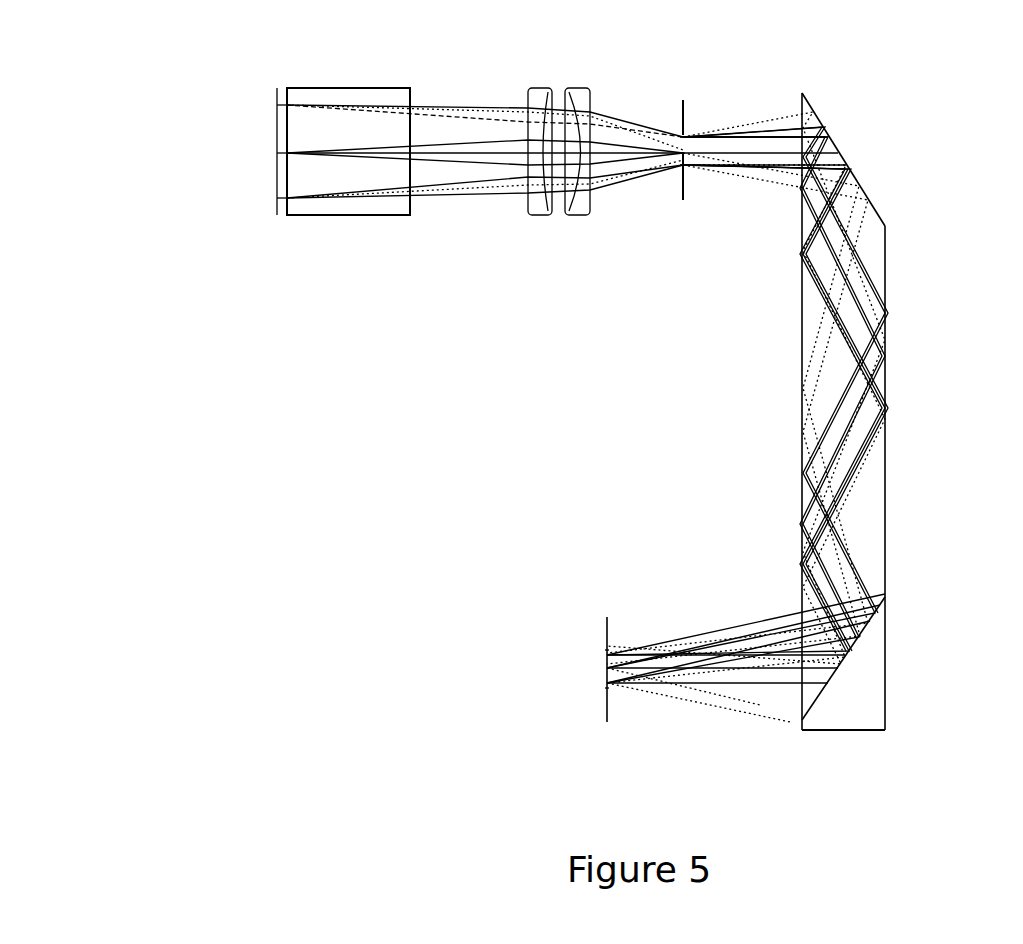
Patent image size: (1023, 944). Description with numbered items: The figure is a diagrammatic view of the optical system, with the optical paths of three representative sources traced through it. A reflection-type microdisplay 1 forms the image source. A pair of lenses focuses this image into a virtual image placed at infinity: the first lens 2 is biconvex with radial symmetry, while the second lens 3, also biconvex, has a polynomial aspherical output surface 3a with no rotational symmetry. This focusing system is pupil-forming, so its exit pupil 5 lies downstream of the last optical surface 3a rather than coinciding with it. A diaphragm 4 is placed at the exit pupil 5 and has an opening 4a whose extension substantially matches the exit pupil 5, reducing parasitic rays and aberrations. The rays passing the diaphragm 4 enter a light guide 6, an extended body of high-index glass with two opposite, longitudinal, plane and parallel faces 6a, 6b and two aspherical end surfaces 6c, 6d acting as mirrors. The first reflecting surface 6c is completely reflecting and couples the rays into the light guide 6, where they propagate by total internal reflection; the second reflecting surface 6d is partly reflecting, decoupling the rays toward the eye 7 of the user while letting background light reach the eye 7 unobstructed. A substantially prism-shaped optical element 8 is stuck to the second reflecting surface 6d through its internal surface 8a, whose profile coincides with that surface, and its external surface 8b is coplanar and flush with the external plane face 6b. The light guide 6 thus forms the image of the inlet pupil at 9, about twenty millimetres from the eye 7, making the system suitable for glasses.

The microdisplay 1 is at (295, 129).
The first lens 2 is at (529, 79).
The second lens 3 is at (612, 162).
The aspherical output surface 3a is at (607, 137).
The diaphragm 4 is at (735, 111).
The opening 4a is at (687, 130).
The exit pupil 5 is at (700, 147).
The light guide 6 is at (808, 423).
The longitudinal plane face 6a is at (802, 313).
The external plane face 6b is at (886, 483).
The first reflecting surface 6c is at (843, 225).
The second reflecting surface 6d is at (827, 765).
The eye 7 is at (592, 680).
The prism-shaped optical element 8 is at (904, 730).
The internal surface 8a is at (839, 768).
The external surface 8b is at (885, 690).
The image of the inlet pupil 9 is at (607, 668).